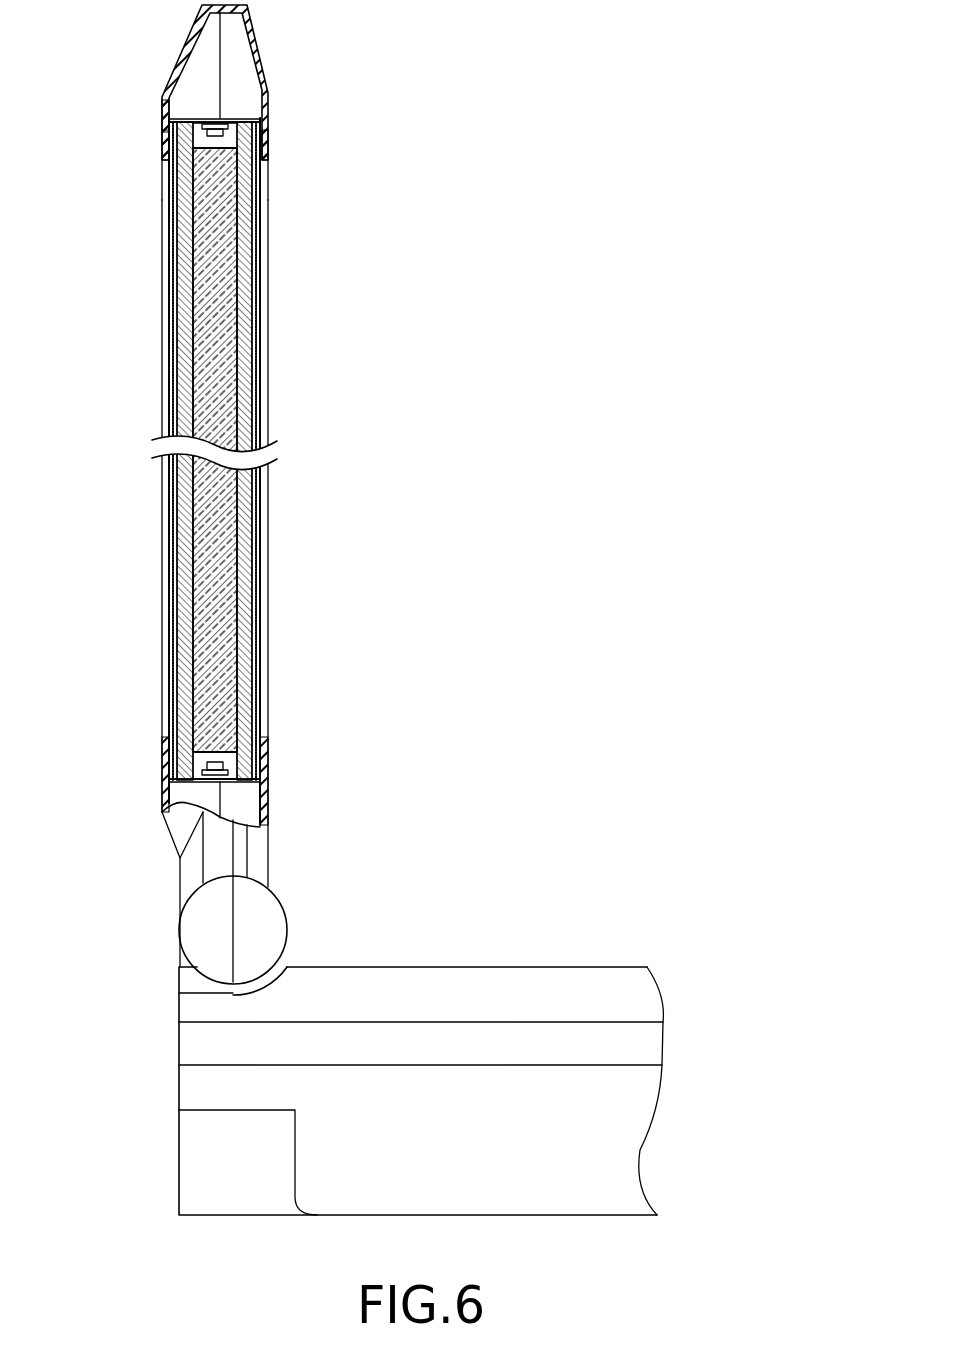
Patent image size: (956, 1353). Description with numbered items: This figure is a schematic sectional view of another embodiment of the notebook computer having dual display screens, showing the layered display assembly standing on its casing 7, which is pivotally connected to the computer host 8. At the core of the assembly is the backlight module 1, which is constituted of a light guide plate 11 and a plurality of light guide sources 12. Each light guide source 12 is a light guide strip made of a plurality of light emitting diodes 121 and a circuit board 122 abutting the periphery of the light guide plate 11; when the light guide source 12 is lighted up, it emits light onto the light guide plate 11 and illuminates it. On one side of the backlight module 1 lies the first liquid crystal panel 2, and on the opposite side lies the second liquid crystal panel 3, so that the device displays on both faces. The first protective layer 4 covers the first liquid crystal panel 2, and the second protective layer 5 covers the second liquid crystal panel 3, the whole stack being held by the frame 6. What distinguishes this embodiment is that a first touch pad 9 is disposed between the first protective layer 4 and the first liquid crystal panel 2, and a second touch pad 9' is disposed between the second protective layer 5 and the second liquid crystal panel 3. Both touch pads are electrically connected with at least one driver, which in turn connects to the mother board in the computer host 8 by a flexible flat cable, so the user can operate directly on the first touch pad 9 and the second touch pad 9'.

The backlight module 1 is at (245, 238).
The light guide plate 11 is at (215, 270).
The light guide source 12 is at (240, 142).
The light emitting diode 121 is at (163, 172).
The circuit board 122 is at (165, 132).
The first liquid crystal panel 2 is at (257, 398).
The second liquid crystal panel 3 is at (163, 398).
The first protective layer 4 is at (259, 343).
The second protective layer 5 is at (178, 343).
The frame 6 is at (195, 118).
The casing 7 is at (258, 50).
The computer host 8 is at (518, 970).
The first touch pad 9 is at (311, 451).
The second touch pad 9' is at (117, 460).